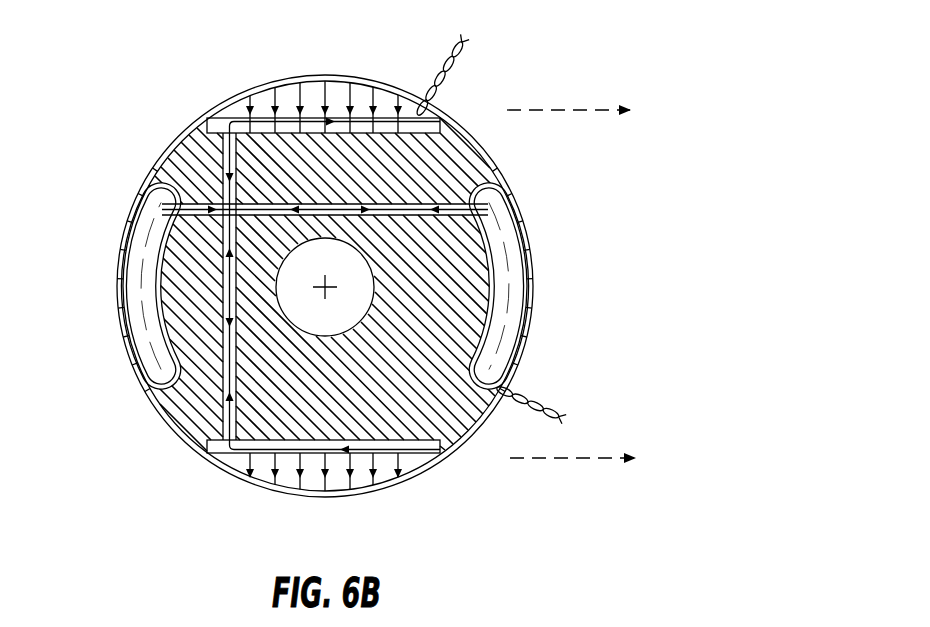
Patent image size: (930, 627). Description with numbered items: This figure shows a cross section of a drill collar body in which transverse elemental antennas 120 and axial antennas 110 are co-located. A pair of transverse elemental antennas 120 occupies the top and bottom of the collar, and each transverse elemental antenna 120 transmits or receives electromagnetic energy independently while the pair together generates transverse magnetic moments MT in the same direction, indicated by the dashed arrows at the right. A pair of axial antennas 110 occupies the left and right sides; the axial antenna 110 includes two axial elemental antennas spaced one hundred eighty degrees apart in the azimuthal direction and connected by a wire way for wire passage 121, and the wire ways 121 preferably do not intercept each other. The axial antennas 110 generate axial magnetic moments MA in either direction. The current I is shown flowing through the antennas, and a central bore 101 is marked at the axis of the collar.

The central shaft opening 101 is at (328, 295).
The axial antenna 110 is at (102, 255).
The transverse elemental antenna 120 is at (268, 75).
The wire way for wire passage 121 is at (448, 205).
The current I is at (350, 108).
The axial magnetic moment MA is at (563, 277).
The transverse magnetic moment MT is at (605, 497).